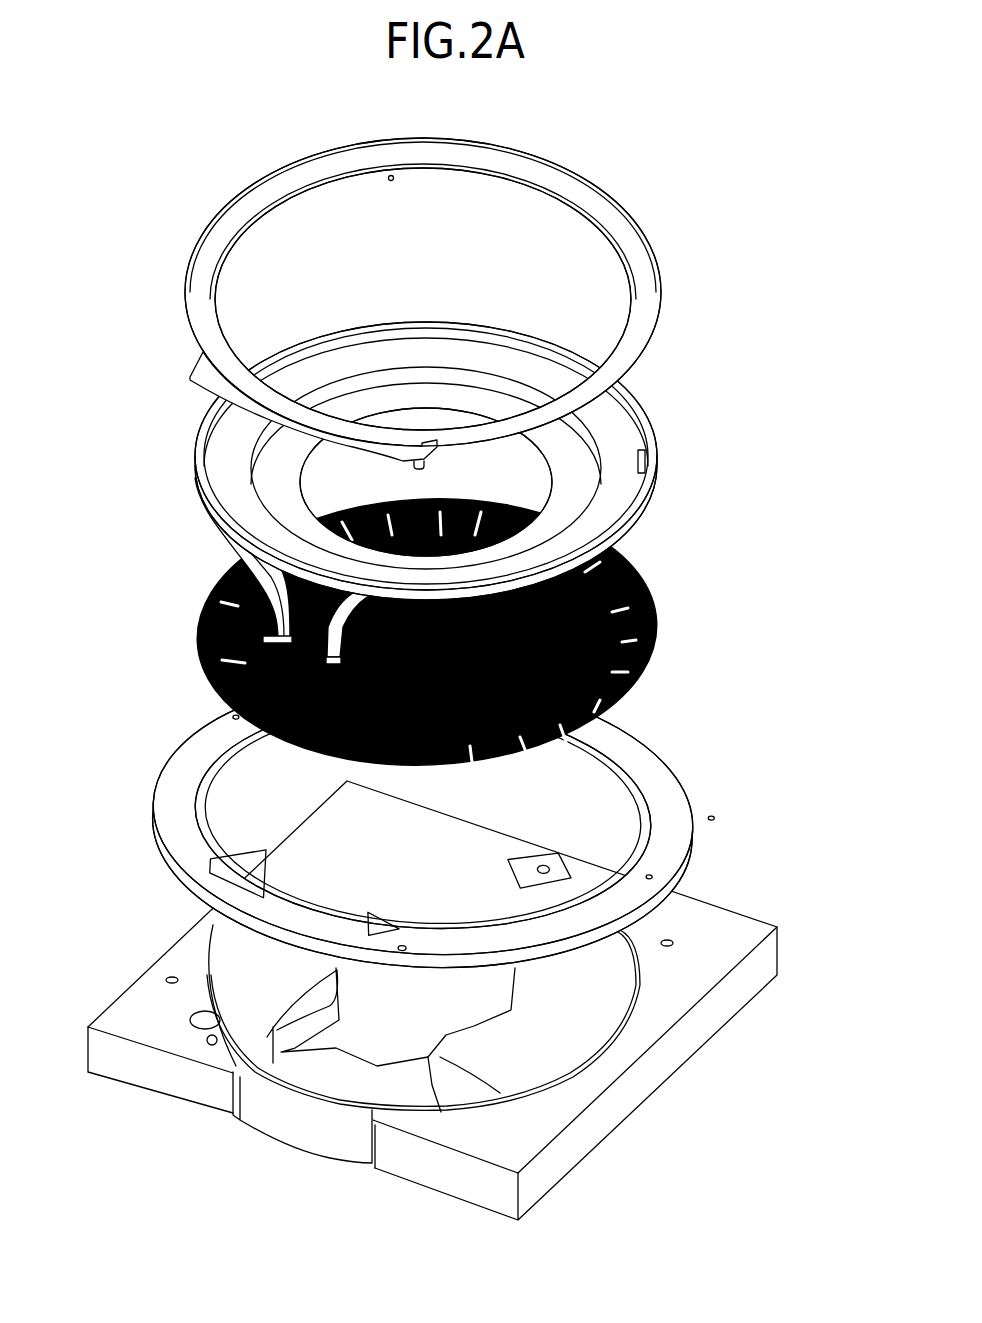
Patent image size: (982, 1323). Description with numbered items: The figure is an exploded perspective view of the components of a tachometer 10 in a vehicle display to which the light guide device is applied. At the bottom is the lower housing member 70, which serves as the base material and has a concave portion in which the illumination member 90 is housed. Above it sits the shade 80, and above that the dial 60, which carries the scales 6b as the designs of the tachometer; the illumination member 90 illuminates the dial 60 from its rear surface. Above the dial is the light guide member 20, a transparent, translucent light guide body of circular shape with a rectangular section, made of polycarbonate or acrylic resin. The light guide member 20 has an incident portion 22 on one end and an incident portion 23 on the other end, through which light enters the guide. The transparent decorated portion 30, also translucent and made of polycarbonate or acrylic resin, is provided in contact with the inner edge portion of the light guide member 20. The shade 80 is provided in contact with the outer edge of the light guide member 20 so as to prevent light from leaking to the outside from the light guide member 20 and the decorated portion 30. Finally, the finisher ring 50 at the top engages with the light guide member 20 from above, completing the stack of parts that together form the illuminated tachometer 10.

The tachometer 10 is at (607, 177).
The finisher ring 50 is at (227, 217).
The light guide member 20 is at (650, 465).
The transparent decorated portion 30 is at (610, 463).
The scales 6b is at (622, 598).
The dial 60 is at (215, 585).
The incident portion 22 is at (263, 640).
The incident portion 23 is at (327, 672).
The shade 80 is at (175, 793).
The illumination member 90 is at (243, 970).
The lower housing member 70 is at (140, 1000).